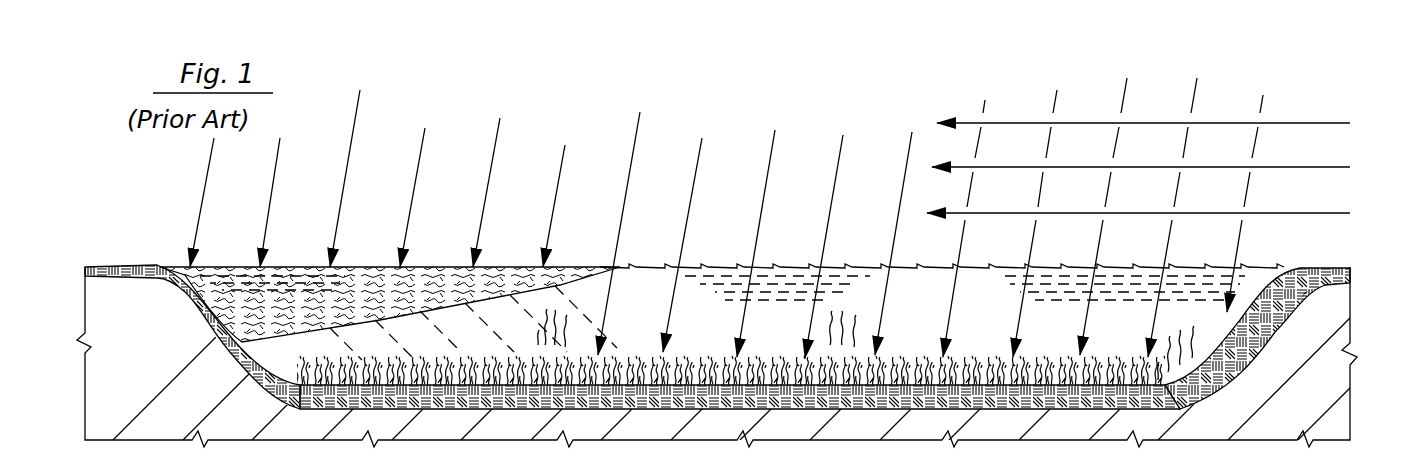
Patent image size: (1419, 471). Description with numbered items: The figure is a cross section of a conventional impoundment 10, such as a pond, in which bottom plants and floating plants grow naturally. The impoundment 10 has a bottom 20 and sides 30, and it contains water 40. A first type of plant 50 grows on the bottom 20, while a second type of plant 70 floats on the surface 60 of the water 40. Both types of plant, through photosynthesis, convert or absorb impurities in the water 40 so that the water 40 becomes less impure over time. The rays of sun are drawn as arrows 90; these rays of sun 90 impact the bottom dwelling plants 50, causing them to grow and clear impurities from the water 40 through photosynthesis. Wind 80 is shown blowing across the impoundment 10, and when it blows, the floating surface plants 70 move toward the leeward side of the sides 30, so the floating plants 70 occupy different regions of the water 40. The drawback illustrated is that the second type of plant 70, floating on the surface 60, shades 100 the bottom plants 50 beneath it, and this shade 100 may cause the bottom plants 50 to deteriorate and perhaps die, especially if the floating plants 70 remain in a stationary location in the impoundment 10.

The impoundment 10 is at (1240, 328).
The bottom 20 is at (725, 388).
The sides 30 is at (174, 348).
The water 40 is at (902, 320).
The first type of plant 50 is at (626, 364).
The surface 60 is at (714, 265).
The second type of plant 70 is at (352, 285).
The wind 80 is at (1357, 110).
The rays of sun 90 is at (419, 162).
The shade 100 is at (432, 332).